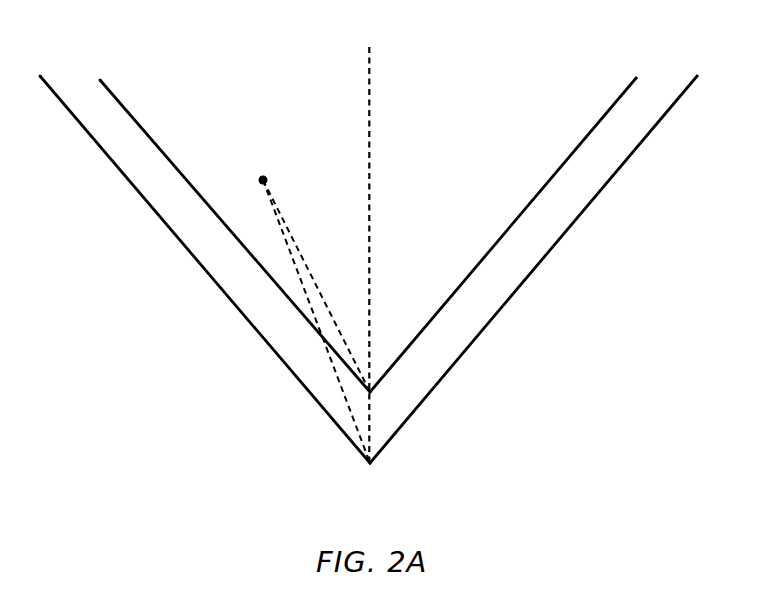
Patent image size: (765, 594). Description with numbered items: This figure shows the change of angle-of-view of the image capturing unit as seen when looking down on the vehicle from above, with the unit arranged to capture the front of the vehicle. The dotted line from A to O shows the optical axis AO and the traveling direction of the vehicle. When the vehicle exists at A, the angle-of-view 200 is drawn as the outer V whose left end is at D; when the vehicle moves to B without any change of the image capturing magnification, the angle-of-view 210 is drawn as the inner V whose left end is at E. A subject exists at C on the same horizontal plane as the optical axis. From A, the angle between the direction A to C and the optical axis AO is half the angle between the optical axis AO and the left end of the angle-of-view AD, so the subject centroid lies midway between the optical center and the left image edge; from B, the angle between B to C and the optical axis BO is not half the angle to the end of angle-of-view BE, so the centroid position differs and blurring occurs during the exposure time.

The angle-of-view 200 is at (603, 190).
The angle-of-view 210 is at (590, 130).
The optical axis end point O is at (369, 239).
The subject position C is at (310, 304).
The vehicle position A is at (377, 477).
The vehicle position B is at (379, 405).
The left end of angle-of-view D is at (32, 65).
The left end of angle-of-view E is at (98, 66).